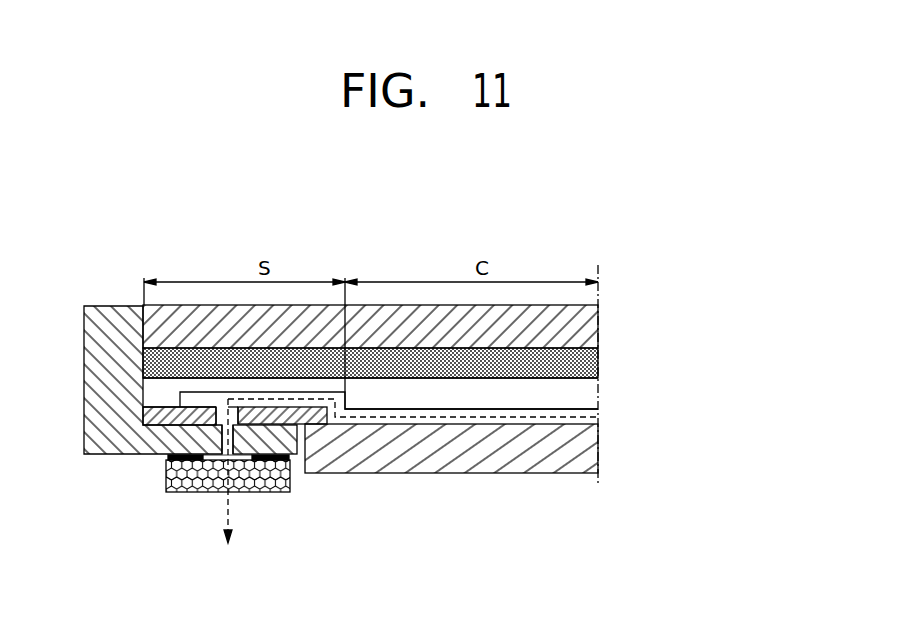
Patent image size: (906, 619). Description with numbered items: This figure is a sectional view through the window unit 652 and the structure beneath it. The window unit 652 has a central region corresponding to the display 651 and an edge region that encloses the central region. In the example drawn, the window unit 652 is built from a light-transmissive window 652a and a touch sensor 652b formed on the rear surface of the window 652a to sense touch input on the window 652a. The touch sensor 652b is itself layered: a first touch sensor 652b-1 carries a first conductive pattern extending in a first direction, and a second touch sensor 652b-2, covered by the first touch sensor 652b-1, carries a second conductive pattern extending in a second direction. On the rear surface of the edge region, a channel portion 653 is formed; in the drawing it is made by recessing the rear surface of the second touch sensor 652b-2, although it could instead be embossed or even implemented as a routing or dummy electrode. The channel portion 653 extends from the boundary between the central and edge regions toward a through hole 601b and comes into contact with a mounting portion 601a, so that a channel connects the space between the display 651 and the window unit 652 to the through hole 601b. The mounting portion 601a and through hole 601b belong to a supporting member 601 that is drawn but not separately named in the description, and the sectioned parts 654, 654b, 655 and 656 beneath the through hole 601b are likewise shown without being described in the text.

The sensor housing 601 is at (92, 375).
The mounting portion 601a is at (155, 413).
The through hole 601b is at (227, 440).
The display 651 is at (598, 452).
The window unit 652 is at (483, 357).
The light-transmissive window 652a is at (598, 325).
The touch sensor 652b is at (457, 379).
The first touch sensor 652b-1 is at (598, 362).
The second touch sensor 652b-2 is at (598, 395).
The channel portion 653 is at (267, 393).
The electrode layer 654 is at (195, 411).
The opening in electrode layer 654b is at (234, 413).
The sensor element 655 is at (263, 493).
The sensor electrodes 656 is at (180, 493).